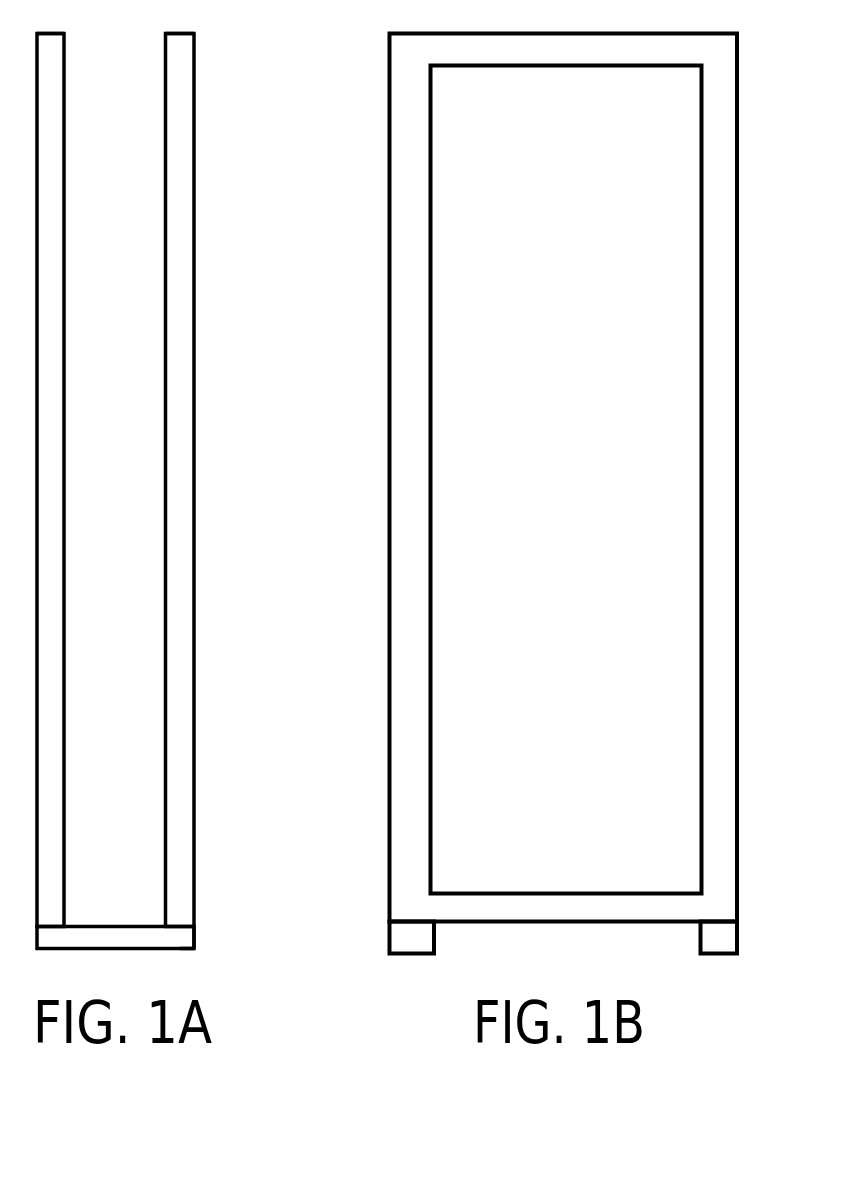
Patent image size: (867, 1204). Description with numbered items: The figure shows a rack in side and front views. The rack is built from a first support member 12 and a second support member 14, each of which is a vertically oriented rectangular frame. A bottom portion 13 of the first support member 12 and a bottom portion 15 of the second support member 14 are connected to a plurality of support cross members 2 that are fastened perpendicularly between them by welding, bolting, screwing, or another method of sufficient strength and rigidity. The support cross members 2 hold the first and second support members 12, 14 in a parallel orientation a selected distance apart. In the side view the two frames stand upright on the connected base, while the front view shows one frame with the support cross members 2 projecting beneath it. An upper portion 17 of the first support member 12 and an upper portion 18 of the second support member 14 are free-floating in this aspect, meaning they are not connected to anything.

In FIG. 1A, the support cross member 2 is at (177, 938).
In FIG. 1B, the support cross member 2 is at (410, 937).
In FIG. 1A, the first support member 12 is at (52, 813).
In FIG. 1B, the first support member 12 is at (415, 755).
In FIG. 1A, the bottom portion 13 is at (68, 923).
In FIG. 1A, the second support member 14 is at (183, 802).
In FIG. 1A, the bottom portion 15 is at (195, 925).
In FIG. 1A, the upper portion 17 is at (47, 82).
In FIG. 1A, the upper portion 18 is at (175, 98).